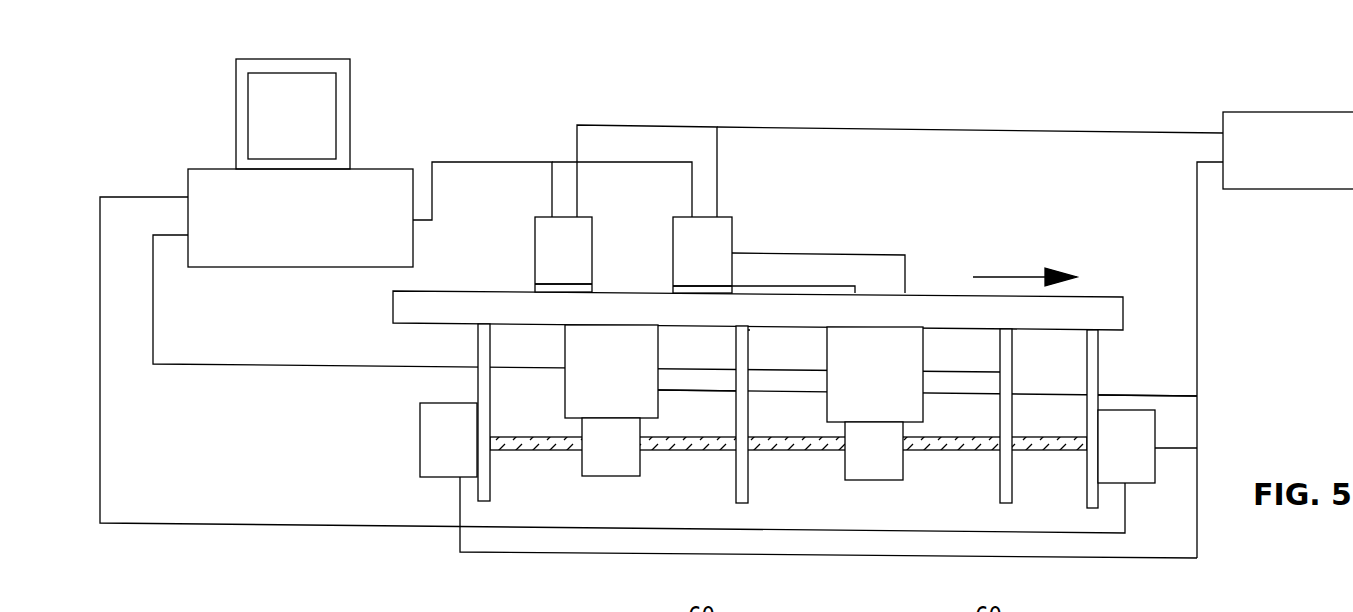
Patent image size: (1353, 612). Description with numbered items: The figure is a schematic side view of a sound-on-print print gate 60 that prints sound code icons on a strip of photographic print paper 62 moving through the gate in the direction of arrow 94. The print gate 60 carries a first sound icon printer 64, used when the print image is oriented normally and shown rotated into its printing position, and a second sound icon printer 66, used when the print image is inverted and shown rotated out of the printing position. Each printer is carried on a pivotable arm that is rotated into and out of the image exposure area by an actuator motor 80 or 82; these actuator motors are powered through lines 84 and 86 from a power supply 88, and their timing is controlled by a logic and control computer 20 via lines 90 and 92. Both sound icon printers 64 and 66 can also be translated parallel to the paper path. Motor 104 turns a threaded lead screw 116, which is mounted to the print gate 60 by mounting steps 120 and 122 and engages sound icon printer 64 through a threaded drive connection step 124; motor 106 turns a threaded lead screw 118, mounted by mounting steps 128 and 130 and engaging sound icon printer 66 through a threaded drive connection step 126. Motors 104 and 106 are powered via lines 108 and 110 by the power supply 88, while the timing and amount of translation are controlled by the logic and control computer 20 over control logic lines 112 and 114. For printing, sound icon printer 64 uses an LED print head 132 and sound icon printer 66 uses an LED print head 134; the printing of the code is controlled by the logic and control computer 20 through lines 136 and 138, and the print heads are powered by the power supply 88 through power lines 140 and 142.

The logic and control computer 20 is at (193, 267).
The print gate 60 is at (360, 310).
The print paper 62 is at (943, 292).
The first sound icon printer 64 is at (536, 232).
The second sound icon printer 66 is at (732, 232).
The actuator motor 80 is at (578, 402).
The actuator motor 82 is at (897, 350).
The power line 84 is at (665, 393).
The power line 86 is at (1108, 396).
The power supply 88 is at (1253, 190).
The control line 90 is at (197, 367).
The control line 92 is at (770, 377).
The arrow 94 is at (1010, 277).
The motor 104 is at (418, 467).
The motor 106 is at (1143, 468).
The power line 108 is at (1112, 560).
The power line 110 is at (1165, 447).
The control logic line 112 is at (275, 525).
The control logic line 114 is at (690, 530).
The threaded lead screw 116 is at (750, 452).
The threaded lead screw 118 is at (1050, 447).
The mounting step 120 is at (480, 395).
The mounting step 122 is at (1013, 347).
The threaded drive connection step 124 is at (593, 476).
The threaded drive connection step 126 is at (857, 480).
The mounting step 128 is at (750, 330).
The mounting step 130 is at (1092, 362).
The LED print head 132 is at (533, 289).
The LED print head 134 is at (670, 289).
The control line 136 is at (508, 160).
The control line 138 is at (665, 162).
The power line 140 is at (587, 125).
The power line 142 is at (975, 128).